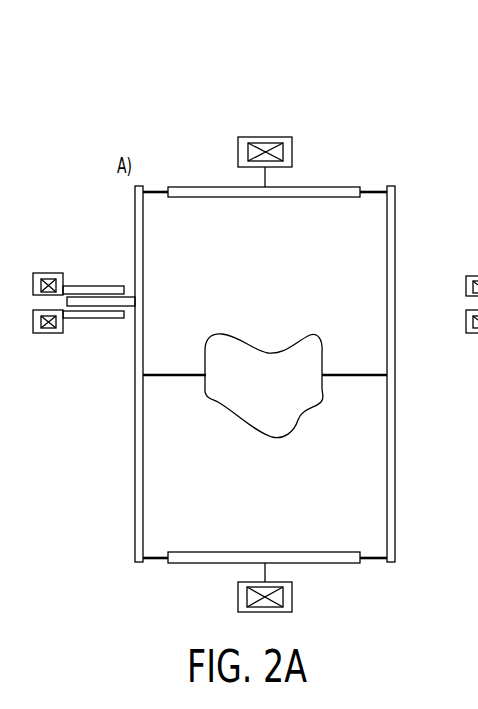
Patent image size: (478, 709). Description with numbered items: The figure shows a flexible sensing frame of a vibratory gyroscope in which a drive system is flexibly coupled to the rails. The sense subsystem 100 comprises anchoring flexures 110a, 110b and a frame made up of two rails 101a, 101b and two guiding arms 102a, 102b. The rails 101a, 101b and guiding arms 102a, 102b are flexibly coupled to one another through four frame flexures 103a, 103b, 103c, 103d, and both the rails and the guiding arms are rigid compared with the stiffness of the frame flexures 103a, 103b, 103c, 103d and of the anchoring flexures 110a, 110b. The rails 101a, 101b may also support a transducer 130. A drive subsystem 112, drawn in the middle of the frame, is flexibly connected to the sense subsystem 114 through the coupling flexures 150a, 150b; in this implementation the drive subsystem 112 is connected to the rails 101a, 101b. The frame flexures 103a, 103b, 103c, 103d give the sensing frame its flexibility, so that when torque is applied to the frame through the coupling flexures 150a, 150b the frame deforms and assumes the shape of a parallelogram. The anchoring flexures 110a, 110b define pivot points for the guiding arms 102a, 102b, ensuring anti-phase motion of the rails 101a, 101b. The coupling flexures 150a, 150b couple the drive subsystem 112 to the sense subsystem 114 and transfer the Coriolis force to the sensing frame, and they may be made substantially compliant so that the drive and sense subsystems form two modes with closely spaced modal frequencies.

The sense subsystem 100 is at (372, 65).
The rail 101a is at (139, 300).
The rail 101b is at (395, 258).
The guiding arm 102a is at (298, 193).
The guiding arm 102b is at (303, 558).
The frame flexure 103a is at (152, 193).
The frame flexure 103b is at (371, 193).
The frame flexure 103c is at (371, 554).
The frame flexure 103d is at (158, 553).
The anchoring flexure 110a is at (262, 180).
The anchoring flexure 110b is at (267, 567).
The drive subsystem 112 is at (302, 395).
The sense subsystem 114 is at (401, 487).
The transducer 130 is at (93, 292).
The coupling flexure 150a is at (157, 378).
The coupling flexure 150b is at (368, 373).